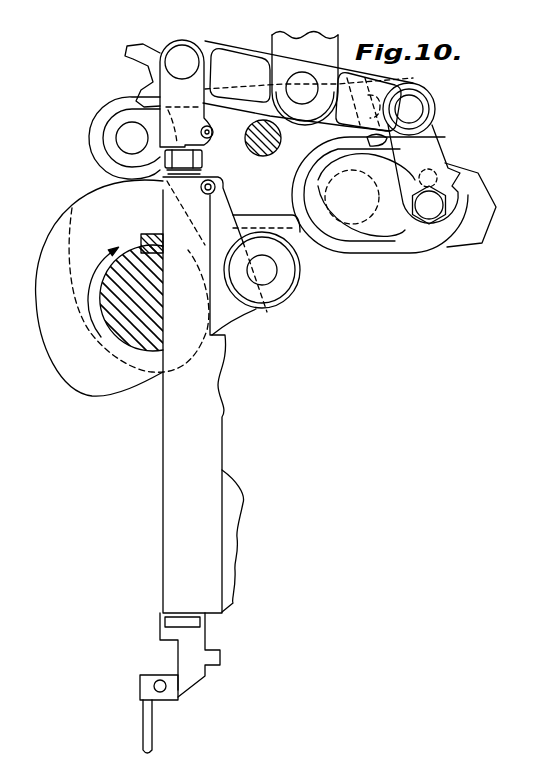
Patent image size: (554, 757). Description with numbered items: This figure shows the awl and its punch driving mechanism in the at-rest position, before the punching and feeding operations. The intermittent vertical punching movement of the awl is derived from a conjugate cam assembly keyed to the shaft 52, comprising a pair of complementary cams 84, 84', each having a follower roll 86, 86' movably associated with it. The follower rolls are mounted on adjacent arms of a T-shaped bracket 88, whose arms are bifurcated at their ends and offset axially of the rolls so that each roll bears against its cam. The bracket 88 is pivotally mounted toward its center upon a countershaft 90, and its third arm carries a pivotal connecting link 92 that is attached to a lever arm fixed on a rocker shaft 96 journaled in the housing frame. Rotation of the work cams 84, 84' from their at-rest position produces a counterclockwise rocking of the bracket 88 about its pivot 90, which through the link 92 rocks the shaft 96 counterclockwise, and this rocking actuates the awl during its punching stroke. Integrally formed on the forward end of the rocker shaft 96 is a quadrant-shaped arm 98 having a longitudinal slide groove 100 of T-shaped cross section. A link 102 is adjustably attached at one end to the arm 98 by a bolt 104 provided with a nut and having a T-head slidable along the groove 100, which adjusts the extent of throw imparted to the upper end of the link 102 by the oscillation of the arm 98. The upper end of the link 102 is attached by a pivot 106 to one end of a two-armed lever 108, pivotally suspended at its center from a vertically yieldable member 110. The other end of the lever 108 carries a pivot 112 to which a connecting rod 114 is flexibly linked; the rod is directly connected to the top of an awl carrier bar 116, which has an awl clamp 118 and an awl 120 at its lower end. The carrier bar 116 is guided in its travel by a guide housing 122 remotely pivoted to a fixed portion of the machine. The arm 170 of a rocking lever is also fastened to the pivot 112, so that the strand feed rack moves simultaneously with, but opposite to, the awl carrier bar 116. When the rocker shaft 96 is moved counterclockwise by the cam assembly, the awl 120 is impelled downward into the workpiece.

The shaft 52 is at (101, 337).
The complementary cam 84 is at (269, 321).
The complementary cam 84' is at (265, 343).
The follower roll 86 is at (111, 138).
The follower roll 86' is at (288, 270).
The T-shaped bracket 88 is at (266, 203).
The countershaft 90 is at (253, 150).
The pivotal connecting link 92 is at (420, 143).
The rocker shaft 96 is at (336, 237).
The quadrant-shaped arm 98 is at (438, 250).
The slide groove 100 is at (470, 203).
The link 102 is at (395, 147).
The bolt 104 is at (433, 210).
The pivot 106 is at (423, 110).
The two-armed lever 108 is at (423, 90).
The vertically yieldable member 110 is at (296, 46).
The pivot 112 is at (182, 53).
The connecting rod 114 is at (157, 197).
The awl carrier bar 116 is at (207, 632).
The awl clamp 118 is at (178, 699).
The awl 120 is at (152, 727).
The guide housing 122 is at (226, 457).
The rocking lever arm 170 is at (147, 47).